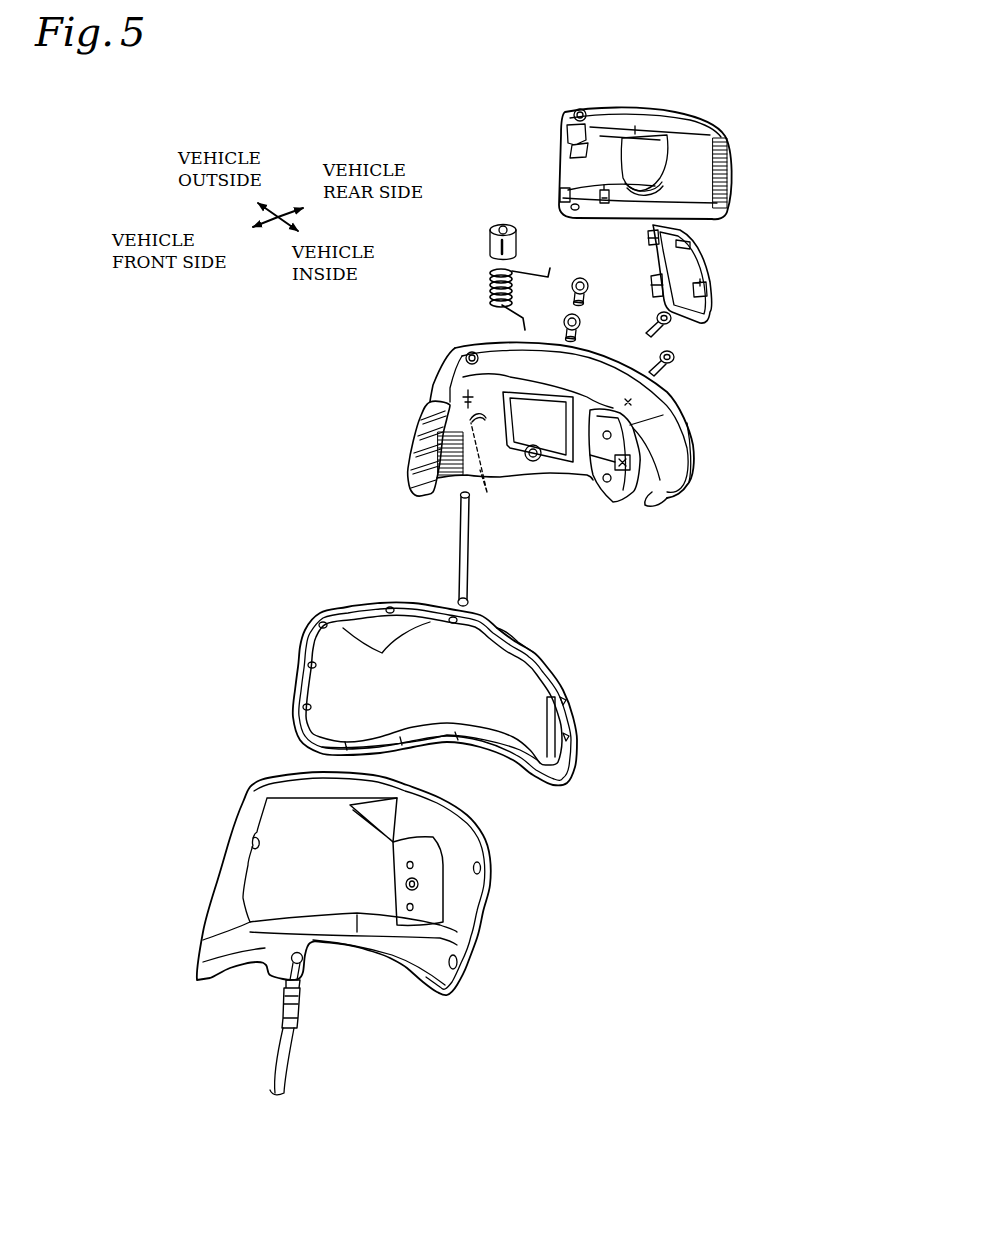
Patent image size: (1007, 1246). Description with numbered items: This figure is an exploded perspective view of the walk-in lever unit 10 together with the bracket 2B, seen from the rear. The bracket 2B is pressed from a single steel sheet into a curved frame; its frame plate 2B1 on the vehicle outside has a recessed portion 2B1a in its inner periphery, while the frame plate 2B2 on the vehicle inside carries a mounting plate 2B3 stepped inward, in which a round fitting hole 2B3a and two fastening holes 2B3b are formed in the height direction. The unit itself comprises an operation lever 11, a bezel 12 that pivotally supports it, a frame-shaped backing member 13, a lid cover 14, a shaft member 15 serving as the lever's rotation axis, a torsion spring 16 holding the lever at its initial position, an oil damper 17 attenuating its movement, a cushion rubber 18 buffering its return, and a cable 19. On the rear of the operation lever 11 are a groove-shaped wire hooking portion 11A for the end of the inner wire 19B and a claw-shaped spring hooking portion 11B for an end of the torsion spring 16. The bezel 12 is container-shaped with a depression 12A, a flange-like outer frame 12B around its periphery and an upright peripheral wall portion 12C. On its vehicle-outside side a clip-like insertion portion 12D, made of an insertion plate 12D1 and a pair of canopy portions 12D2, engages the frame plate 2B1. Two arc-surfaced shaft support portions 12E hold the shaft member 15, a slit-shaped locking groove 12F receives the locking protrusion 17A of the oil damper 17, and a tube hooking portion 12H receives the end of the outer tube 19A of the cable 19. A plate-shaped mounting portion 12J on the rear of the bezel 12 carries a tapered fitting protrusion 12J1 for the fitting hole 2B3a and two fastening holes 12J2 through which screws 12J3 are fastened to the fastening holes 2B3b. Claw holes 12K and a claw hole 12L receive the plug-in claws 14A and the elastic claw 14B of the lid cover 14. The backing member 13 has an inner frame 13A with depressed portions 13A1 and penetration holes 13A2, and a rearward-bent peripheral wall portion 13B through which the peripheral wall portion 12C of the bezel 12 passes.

The walk-in lever unit 10 is at (296, 372).
The operation lever 11 is at (617, 146).
The wire hooking portion 11A is at (639, 165).
The spring hooking portion 11B is at (601, 196).
The bezel 12 is at (521, 441).
The depression 12A is at (632, 402).
The outer frame 12B is at (690, 472).
The peripheral wall portion 12C is at (668, 453).
The insertion portion 12D is at (371, 445).
The insertion plate 12D1 is at (416, 450).
The canopy portions 12D2 is at (418, 412).
The shaft support portions 12E is at (491, 465).
The locking groove 12F is at (466, 395).
The tube hooking portion 12H is at (533, 461).
The mounting portion 12J is at (646, 490).
The fitting protrusion 12J1 is at (592, 468).
The fastening holes 12J2 is at (612, 435).
The screws 12J3 is at (676, 362).
The claw holes 12K is at (592, 462).
The claw hole 12L is at (664, 500).
The backing member 13 is at (440, 679).
The inner frame 13A is at (306, 690).
The depressed portions 13A1 is at (520, 636).
The penetration holes 13A2 is at (382, 653).
The peripheral wall portion 13B is at (505, 762).
The lid cover 14 is at (683, 274).
The plug-in claws 14A is at (652, 280).
The elastic claw 14B is at (708, 291).
The shaft member 15 is at (457, 542).
The torsion spring 16 is at (487, 296).
The oil damper 17 is at (476, 228).
The locking protrusion 17A is at (499, 249).
The cushion rubber 18 is at (582, 326).
The cable 19 is at (283, 1024).
The outer tube 19A is at (274, 1052).
The inner wire 19B is at (300, 975).
The bracket 2B is at (358, 883).
The frame plate 2B1 is at (226, 870).
The recessed portion 2B1a is at (252, 840).
The frame plate 2B2 is at (465, 917).
The mounting plate 2B3 is at (437, 861).
The fitting hole 2B3a is at (405, 884).
The fastening holes 2B3b is at (406, 863).